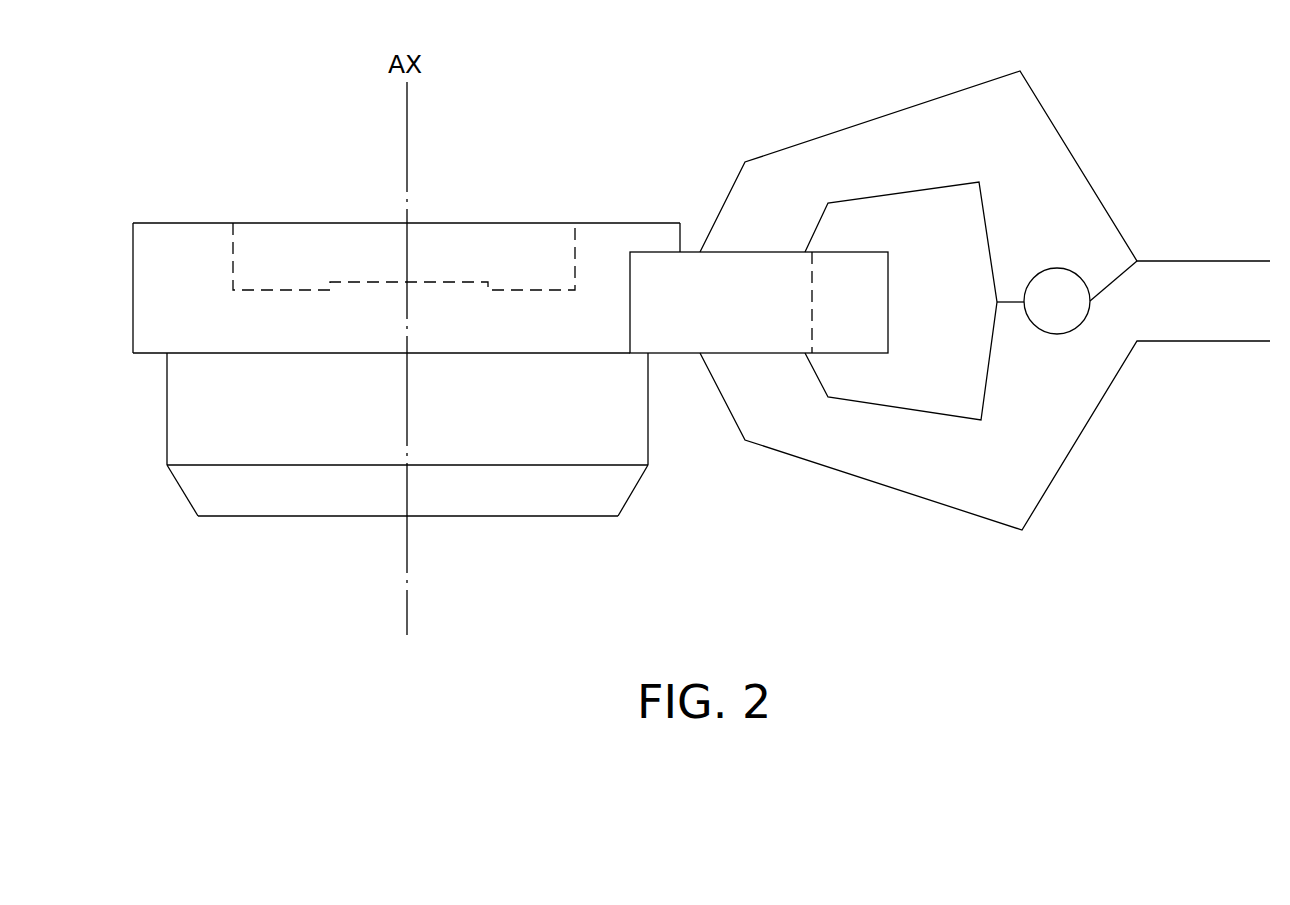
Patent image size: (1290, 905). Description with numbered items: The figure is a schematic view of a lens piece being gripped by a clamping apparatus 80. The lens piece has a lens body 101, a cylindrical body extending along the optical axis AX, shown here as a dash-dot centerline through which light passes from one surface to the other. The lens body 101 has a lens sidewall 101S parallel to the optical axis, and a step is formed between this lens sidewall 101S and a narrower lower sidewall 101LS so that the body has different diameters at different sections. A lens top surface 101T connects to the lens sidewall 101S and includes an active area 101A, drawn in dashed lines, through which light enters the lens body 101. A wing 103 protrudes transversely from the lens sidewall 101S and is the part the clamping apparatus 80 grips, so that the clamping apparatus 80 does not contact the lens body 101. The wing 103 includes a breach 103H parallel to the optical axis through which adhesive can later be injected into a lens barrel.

The lens body 101 is at (399, 317).
The lens top surface 101T is at (168, 223).
The lens sidewall 101S is at (227, 312).
The lower side surface of lens barrel 101LS is at (232, 388).
The active area 101A is at (433, 277).
The wing 103 is at (791, 347).
The breach 103H is at (847, 302).
The clamping apparatus 80 is at (1217, 277).